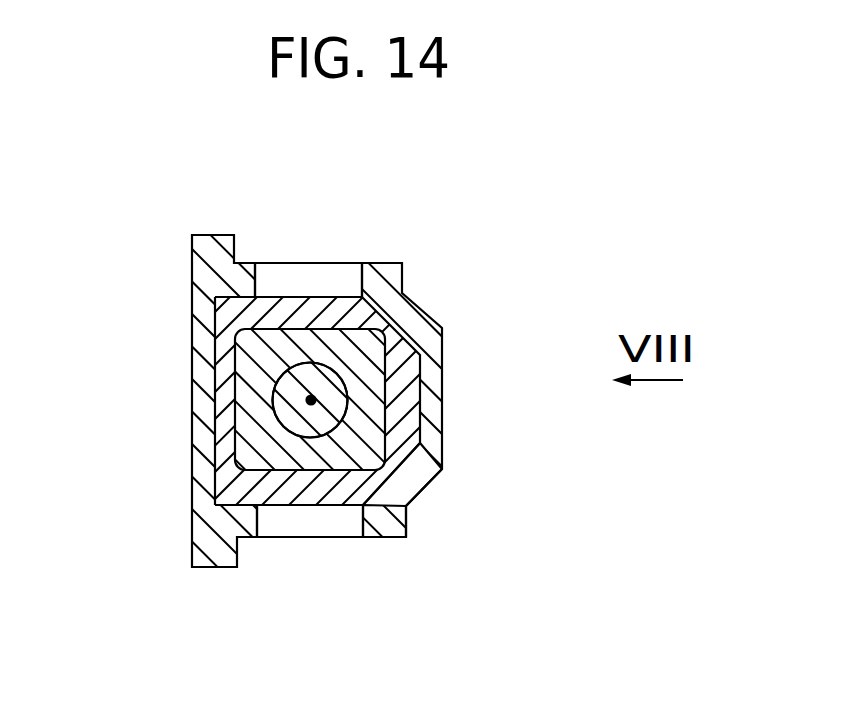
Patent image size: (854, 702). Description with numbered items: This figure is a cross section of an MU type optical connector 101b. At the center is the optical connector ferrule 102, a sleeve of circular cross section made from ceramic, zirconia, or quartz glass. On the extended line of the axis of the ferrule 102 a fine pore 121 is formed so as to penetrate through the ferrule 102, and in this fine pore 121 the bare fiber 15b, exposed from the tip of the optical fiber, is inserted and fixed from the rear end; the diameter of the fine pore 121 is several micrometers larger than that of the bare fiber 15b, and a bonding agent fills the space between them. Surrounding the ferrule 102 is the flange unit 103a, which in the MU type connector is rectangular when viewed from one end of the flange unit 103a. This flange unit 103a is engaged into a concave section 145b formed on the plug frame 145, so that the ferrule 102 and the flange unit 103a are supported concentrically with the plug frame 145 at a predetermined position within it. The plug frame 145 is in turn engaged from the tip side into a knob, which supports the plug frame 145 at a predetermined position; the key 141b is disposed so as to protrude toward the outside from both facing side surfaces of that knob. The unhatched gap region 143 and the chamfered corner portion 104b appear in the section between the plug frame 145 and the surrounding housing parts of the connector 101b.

The MU type optical connector 101b is at (620, 188).
The key 141b is at (211, 235).
The gap / clearance 143 is at (387, 263).
The plug frame 145 is at (403, 302).
The concave section 145b is at (366, 435).
The chamfered corner portion 104b is at (448, 502).
The flange unit 103a is at (372, 378).
The bare fiber 15b is at (273, 407).
The optical connector ferrule 102 is at (311, 418).
The fine pore 121 is at (308, 399).